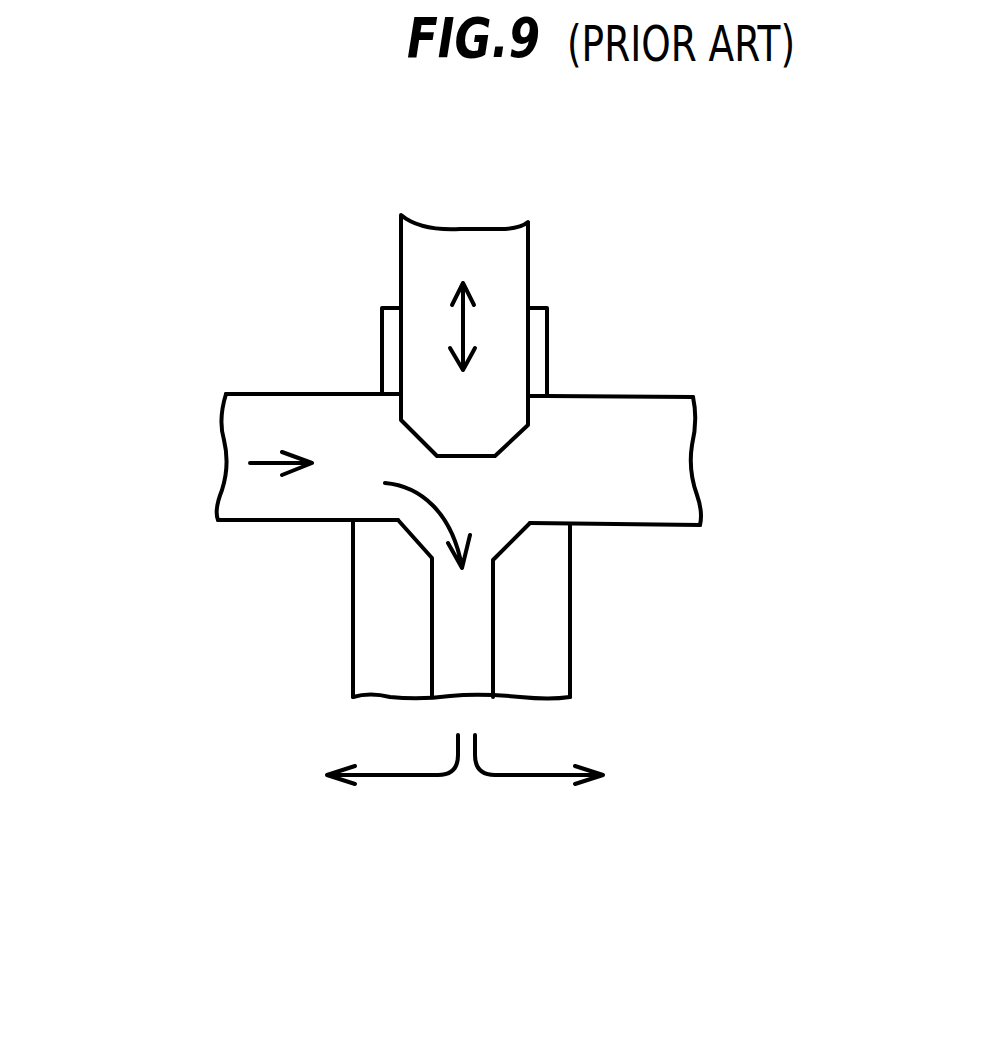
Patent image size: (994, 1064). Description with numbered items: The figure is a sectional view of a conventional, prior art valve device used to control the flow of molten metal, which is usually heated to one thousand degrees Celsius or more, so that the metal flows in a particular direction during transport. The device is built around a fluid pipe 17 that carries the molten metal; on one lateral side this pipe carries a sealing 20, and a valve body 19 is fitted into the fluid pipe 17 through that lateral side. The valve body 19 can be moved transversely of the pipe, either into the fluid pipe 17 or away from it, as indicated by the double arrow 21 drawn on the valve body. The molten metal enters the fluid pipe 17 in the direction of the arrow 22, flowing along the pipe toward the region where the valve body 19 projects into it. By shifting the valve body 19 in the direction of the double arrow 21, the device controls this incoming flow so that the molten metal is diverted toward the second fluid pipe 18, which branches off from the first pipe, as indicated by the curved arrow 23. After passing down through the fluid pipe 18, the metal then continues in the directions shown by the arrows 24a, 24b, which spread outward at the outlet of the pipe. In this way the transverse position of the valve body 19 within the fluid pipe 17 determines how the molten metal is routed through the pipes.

The fluid pipe 17 is at (652, 393).
The fluid pipe 18 is at (350, 637).
The valve body 19 is at (532, 242).
The sealing 20 is at (383, 355).
The double arrow 21 is at (460, 316).
The arrow 22 is at (275, 460).
The arrow 23 is at (440, 505).
The arrow 24a is at (403, 777).
The arrow 24b is at (533, 777).